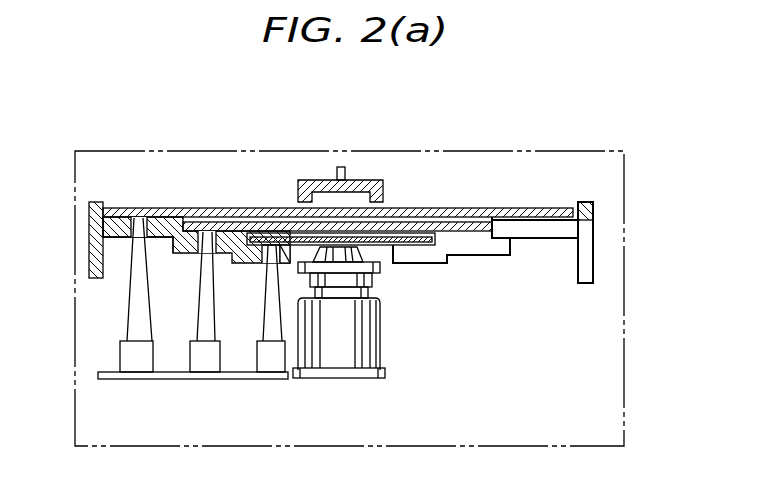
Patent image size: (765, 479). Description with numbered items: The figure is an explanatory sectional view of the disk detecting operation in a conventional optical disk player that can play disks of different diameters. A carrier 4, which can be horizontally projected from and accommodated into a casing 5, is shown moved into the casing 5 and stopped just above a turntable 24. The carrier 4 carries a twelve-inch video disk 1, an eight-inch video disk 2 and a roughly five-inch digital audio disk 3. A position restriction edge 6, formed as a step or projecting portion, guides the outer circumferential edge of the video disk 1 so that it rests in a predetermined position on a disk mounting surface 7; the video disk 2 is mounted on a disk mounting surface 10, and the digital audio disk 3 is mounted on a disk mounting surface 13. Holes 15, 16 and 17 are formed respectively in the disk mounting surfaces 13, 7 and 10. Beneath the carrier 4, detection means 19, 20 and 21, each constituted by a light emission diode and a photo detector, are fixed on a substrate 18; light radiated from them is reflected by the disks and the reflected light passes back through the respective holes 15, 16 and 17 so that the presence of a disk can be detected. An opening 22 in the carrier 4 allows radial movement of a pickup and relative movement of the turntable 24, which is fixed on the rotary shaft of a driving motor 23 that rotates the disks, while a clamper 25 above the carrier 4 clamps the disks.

The video disk 1 is at (490, 213).
The video disk 2 is at (410, 228).
The digital audio disk 3 is at (378, 242).
The carrier 4 is at (88, 262).
The casing 5 is at (625, 263).
The position restriction edge 6 is at (105, 207).
The disk mounting surface 7 is at (562, 224).
The disk mounting surface 10 is at (470, 244).
The disk mounting surface 13 is at (425, 246).
The hole 15 is at (265, 264).
The hole 16 is at (200, 247).
The hole 17 is at (130, 246).
The substrate 18 is at (174, 380).
The detection means 19 is at (275, 364).
The detection means 20 is at (207, 364).
The detection means 21 is at (135, 364).
The opening 22 is at (500, 247).
The driving motor 23 is at (377, 356).
The turntable 24 is at (302, 262).
The clamper 25 is at (362, 181).